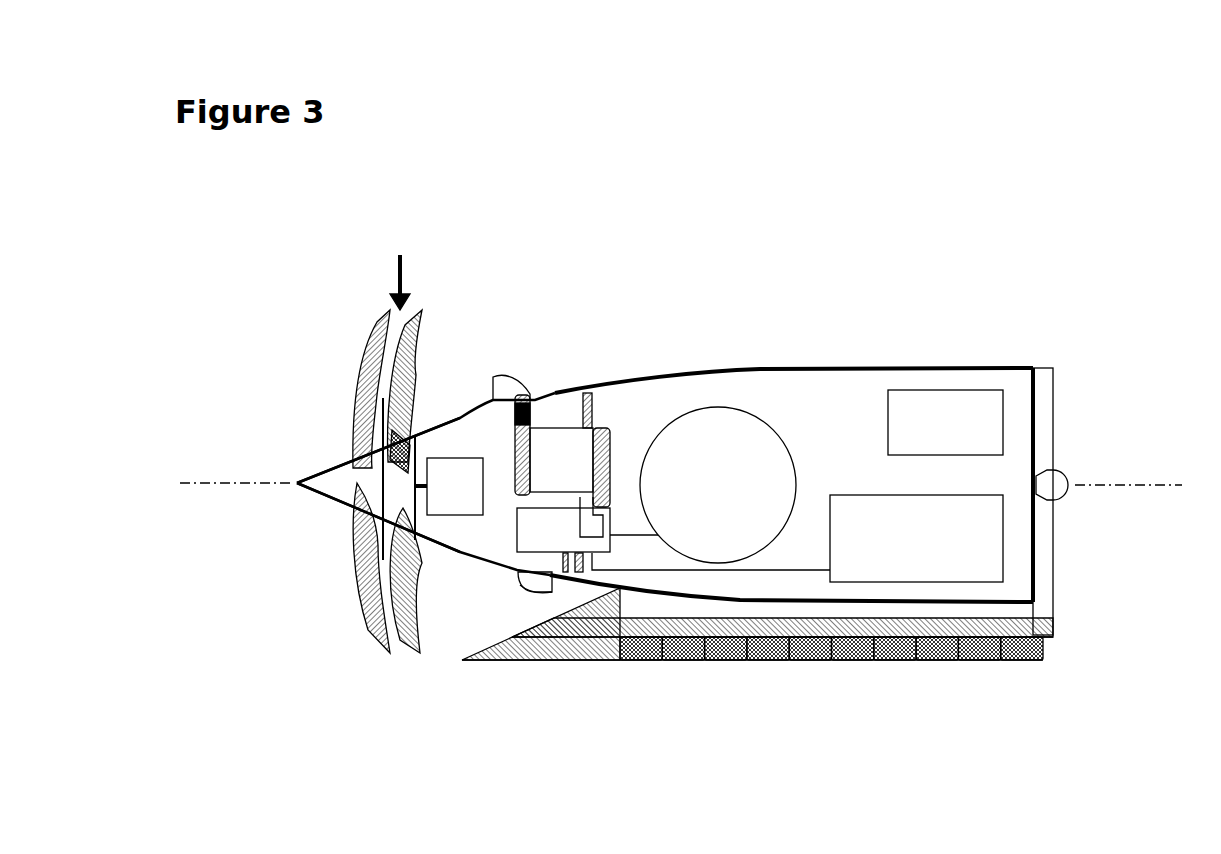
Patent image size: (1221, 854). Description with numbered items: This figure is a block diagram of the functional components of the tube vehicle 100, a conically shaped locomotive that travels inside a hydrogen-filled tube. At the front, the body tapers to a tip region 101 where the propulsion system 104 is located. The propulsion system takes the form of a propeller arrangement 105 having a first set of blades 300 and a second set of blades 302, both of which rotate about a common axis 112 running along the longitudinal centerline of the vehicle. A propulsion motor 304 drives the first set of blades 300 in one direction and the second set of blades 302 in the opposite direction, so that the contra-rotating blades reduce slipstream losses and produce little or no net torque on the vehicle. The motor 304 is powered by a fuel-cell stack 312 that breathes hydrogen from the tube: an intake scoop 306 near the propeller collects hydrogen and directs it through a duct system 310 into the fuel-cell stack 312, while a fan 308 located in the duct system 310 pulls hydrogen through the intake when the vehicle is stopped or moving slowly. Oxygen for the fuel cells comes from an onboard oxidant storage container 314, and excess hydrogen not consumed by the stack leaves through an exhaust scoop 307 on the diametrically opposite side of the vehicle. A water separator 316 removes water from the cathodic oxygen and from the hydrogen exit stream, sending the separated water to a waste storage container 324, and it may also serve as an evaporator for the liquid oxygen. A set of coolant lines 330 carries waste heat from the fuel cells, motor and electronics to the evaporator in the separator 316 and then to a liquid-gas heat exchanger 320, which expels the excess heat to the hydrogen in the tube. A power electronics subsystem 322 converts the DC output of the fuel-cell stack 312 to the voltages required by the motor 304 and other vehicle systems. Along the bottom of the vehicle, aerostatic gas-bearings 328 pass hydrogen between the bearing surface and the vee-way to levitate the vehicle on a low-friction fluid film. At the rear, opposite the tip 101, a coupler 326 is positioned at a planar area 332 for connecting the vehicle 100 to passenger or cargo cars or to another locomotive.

The tube vehicle 100 is at (847, 363).
The tip region 101 is at (324, 503).
The propulsion system 104 is at (349, 412).
The propeller arrangement 105 is at (401, 267).
The common axis 112 is at (235, 489).
The first set of blades 300 is at (368, 652).
The second set of blades 302 is at (410, 653).
The propulsion motor 304 is at (457, 471).
The intake scoop 306 is at (513, 377).
The exhaust scoop 307 is at (527, 594).
The fan 308 is at (527, 395).
The duct system 310 is at (506, 438).
The fuel-cell stack 312 is at (554, 443).
The oxidant storage container 314 is at (710, 529).
The water separator 316 is at (521, 581).
The liquid-gas heat exchanger 320 is at (688, 368).
The power electronics subsystem 322 is at (960, 411).
The waste storage container 324 is at (976, 551).
The coupler 326 is at (1068, 476).
The aerostatic gas-bearings 328 is at (936, 666).
The coolant lines 330 is at (591, 402).
The planar area 332 is at (1057, 393).